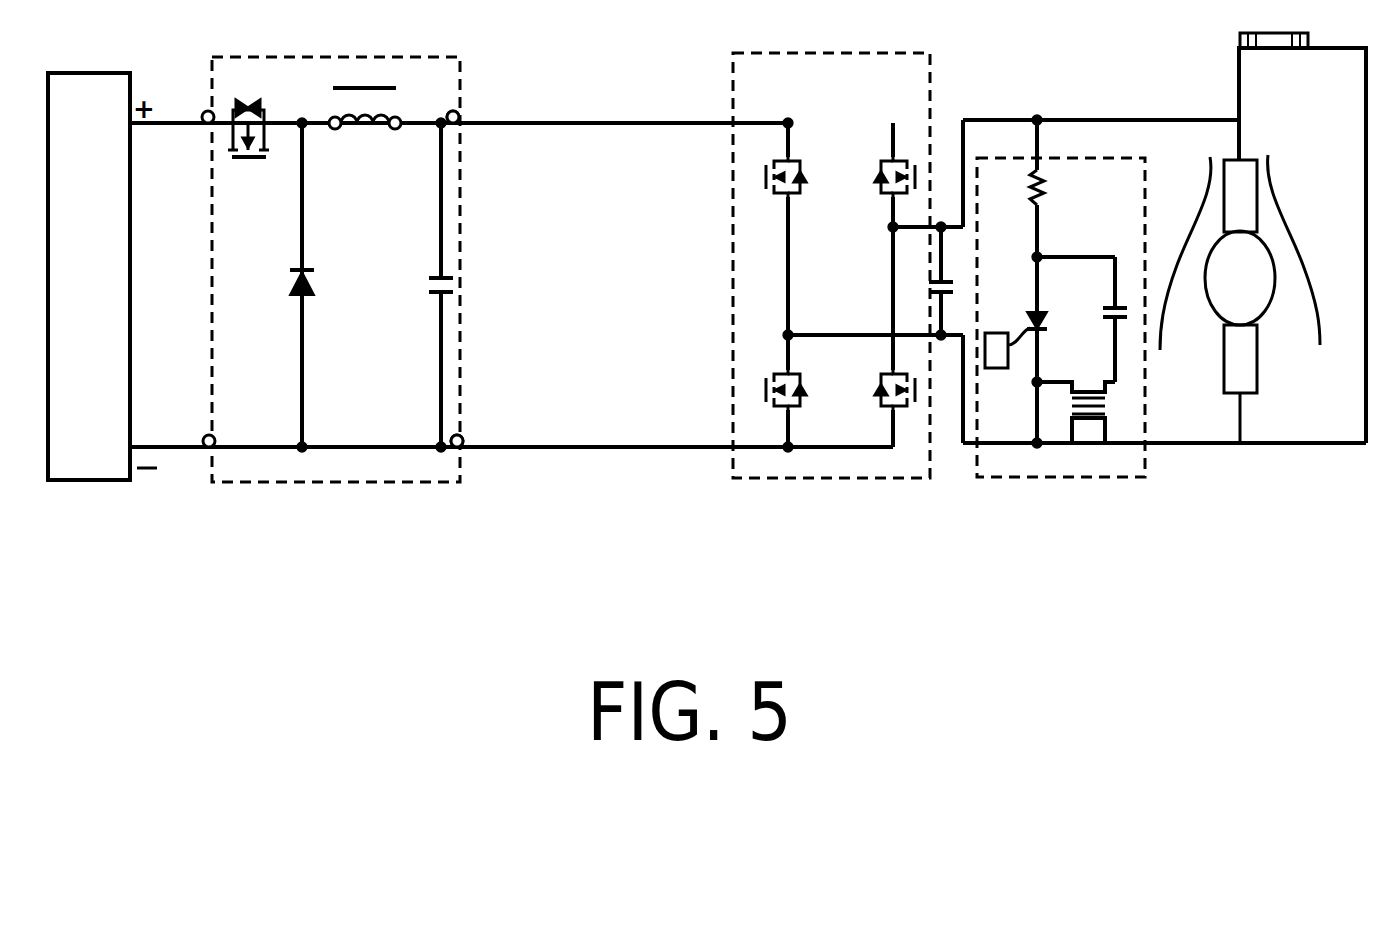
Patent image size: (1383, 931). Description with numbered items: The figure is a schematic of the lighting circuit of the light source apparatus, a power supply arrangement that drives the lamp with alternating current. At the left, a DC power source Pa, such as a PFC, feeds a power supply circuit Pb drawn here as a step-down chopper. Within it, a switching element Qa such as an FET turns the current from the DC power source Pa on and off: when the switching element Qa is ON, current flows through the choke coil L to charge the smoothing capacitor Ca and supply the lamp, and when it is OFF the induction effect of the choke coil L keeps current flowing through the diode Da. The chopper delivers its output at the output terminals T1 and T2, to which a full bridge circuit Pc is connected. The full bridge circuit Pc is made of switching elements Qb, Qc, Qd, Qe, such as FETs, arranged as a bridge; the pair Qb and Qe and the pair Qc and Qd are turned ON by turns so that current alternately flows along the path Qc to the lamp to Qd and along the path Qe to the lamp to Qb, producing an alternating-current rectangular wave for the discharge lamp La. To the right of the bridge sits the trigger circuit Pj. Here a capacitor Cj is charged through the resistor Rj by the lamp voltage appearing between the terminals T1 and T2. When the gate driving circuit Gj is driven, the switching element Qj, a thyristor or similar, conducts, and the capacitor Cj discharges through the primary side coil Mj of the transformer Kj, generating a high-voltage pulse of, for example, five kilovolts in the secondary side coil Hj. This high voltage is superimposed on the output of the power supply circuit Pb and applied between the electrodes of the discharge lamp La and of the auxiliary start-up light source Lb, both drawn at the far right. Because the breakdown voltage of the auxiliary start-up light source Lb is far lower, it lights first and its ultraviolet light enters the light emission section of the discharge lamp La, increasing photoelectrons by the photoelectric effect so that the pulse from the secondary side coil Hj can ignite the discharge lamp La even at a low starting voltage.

The DC power source Pa is at (90, 481).
The power supply circuit Pb is at (312, 482).
The full bridge circuit Pc is at (812, 479).
The trigger circuit Pj is at (1047, 478).
The switching element Qa is at (248, 155).
The choke coil L is at (365, 134).
The diode Da is at (276, 285).
The smoothing capacitor Ca is at (416, 285).
The output terminal T1 is at (476, 138).
The output terminal T2 is at (479, 421).
The switching element Qb is at (775, 196).
The switching element Qc is at (880, 196).
The switching element Qd is at (775, 372).
The switching element Qe is at (877, 375).
The resistor Rj is at (1044, 188).
The capacitor Cj is at (1122, 298).
The gate driving circuit Gj is at (998, 332).
The switching element Qj is at (1046, 322).
The primary side coil Mj is at (1075, 386).
The transformer Kj is at (1114, 402).
The secondary side coil Hj is at (1089, 425).
The discharge lamp La is at (1222, 301).
The auxiliary start-up light source Lb is at (1263, 238).